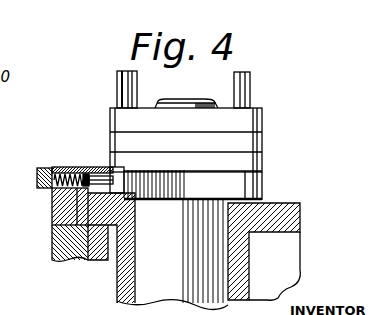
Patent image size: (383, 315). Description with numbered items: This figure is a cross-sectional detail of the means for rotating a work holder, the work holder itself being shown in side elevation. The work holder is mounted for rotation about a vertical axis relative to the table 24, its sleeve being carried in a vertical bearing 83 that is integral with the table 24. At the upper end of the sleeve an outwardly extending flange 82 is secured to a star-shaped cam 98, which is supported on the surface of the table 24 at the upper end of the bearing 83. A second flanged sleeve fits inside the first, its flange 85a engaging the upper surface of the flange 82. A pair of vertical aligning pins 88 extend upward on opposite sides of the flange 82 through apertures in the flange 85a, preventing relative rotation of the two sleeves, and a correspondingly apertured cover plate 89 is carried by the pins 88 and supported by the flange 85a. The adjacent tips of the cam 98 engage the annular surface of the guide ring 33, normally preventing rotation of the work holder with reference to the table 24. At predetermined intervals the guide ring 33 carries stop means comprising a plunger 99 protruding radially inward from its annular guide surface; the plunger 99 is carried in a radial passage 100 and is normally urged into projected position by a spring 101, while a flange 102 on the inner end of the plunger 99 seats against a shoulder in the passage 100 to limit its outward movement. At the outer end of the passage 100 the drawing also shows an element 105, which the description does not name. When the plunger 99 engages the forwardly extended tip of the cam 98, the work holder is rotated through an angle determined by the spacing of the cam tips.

The table 24 is at (300, 217).
The guide ring 33 is at (53, 212).
The flange 82 is at (255, 167).
The bearing 83 is at (115, 283).
The flange 85a is at (255, 147).
The aligning pins 88 is at (137, 78).
The cover plate 89 is at (253, 125).
The star-shaped cam 98 is at (237, 190).
The plunger 99 is at (100, 174).
The radial passage 100 is at (75, 167).
The spring 101 is at (84, 166).
The flange 102 is at (88, 258).
The end plate 105 is at (37, 171).